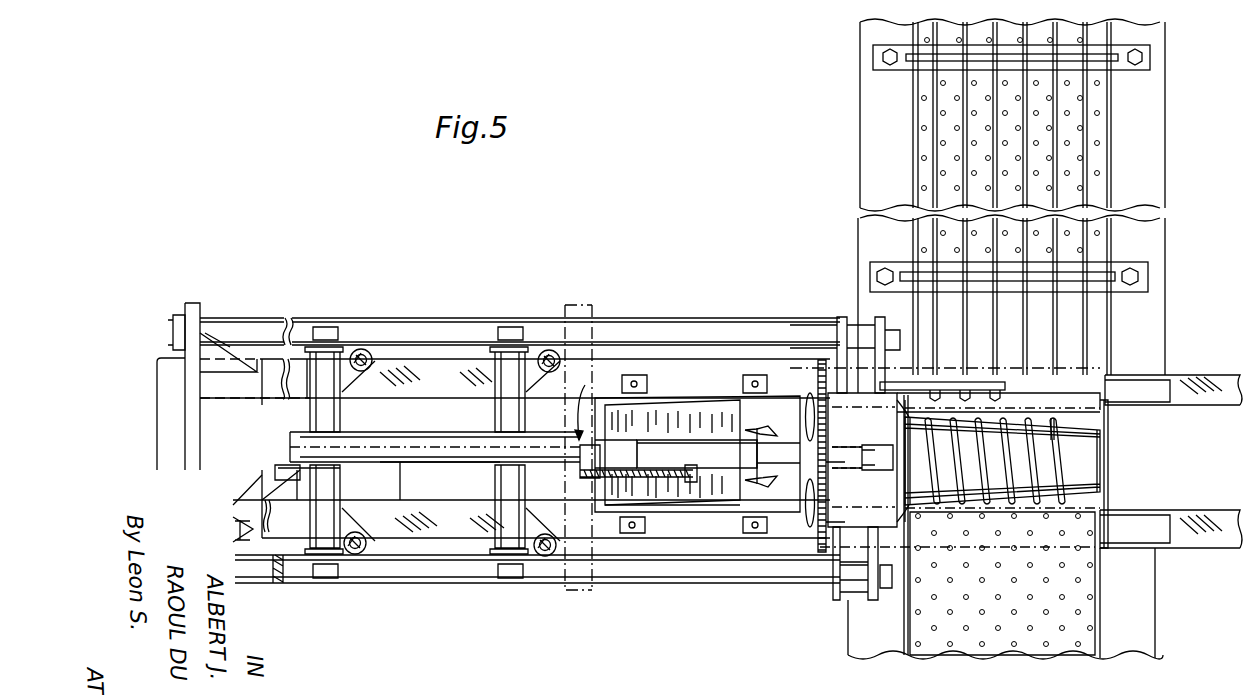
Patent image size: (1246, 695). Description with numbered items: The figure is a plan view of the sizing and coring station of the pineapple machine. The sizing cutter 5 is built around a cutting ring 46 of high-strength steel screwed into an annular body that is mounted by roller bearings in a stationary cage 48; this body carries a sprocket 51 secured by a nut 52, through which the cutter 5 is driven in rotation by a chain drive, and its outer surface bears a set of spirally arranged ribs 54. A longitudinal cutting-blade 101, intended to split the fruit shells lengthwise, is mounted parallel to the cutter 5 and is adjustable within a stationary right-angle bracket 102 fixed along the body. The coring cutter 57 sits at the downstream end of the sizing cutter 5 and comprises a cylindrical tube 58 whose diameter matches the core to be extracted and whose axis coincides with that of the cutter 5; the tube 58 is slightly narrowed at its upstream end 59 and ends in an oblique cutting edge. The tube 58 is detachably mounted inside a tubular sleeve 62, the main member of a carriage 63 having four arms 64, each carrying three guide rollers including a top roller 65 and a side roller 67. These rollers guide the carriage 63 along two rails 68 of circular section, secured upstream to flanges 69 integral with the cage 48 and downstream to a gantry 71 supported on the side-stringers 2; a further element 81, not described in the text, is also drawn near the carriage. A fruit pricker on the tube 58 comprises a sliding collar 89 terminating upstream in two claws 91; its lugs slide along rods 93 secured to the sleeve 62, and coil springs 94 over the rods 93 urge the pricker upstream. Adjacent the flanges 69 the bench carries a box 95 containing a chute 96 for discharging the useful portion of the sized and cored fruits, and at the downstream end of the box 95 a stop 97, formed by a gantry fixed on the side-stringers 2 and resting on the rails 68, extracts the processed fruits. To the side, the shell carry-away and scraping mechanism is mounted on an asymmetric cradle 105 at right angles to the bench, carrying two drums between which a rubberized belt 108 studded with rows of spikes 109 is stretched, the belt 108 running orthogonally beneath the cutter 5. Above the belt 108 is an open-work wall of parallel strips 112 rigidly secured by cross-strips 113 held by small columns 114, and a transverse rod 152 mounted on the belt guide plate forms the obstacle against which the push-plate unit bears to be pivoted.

The side-stringers 2 is at (418, 372).
The sizing cutter 5 is at (1020, 480).
The cutting ring 46 is at (1085, 440).
The stationary cage 48 is at (825, 545).
The sprocket 51 is at (822, 360).
The nut 52 is at (814, 440).
The spirally arranged ribs 54 is at (1030, 448).
The coring cutter 57 is at (594, 405).
The cylindrical tube 58 is at (620, 452).
The upstream end 59 is at (876, 452).
The tubular sleeve 62 is at (452, 485).
The carriage 63 is at (420, 422).
The arms 64 is at (505, 330).
The top roller 65 is at (325, 330).
The side roller 67 is at (372, 350).
The rails 68 is at (660, 328).
The flanges 69 is at (870, 592).
The gantry 71 is at (180, 420).
The bearing 81 is at (285, 472).
The sliding collar 89 is at (716, 452).
The claws 91 is at (762, 432).
The rods 93 is at (612, 500).
The coil springs 94 is at (665, 492).
The box 95 is at (680, 400).
The chute 96 is at (723, 515).
The stop 97 is at (595, 345).
The longitudinal cutting-blade 101 is at (1060, 408).
The right-angle bracket 102 is at (965, 380).
The asymmetric cradle 105 is at (885, 127).
The rubberized belt 108 is at (1097, 130).
The spikes 109 is at (1060, 628).
The parallel strips 112 is at (1060, 183).
The cross-strips 113 is at (1145, 272).
The small columns 114 is at (880, 50).
The transverse rod 152 is at (1110, 470).